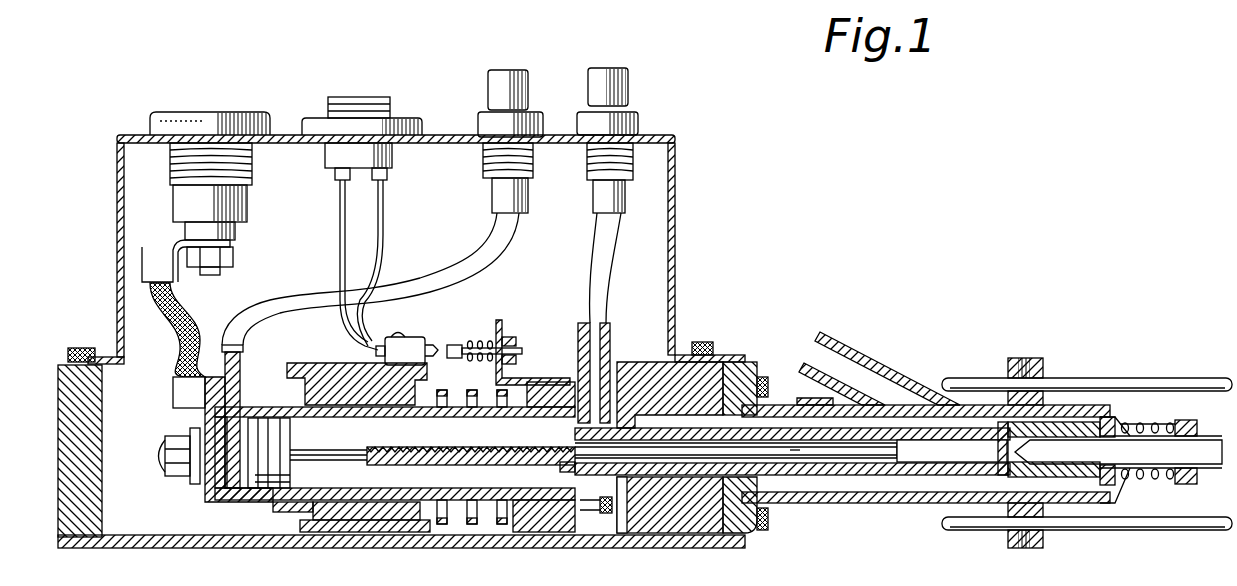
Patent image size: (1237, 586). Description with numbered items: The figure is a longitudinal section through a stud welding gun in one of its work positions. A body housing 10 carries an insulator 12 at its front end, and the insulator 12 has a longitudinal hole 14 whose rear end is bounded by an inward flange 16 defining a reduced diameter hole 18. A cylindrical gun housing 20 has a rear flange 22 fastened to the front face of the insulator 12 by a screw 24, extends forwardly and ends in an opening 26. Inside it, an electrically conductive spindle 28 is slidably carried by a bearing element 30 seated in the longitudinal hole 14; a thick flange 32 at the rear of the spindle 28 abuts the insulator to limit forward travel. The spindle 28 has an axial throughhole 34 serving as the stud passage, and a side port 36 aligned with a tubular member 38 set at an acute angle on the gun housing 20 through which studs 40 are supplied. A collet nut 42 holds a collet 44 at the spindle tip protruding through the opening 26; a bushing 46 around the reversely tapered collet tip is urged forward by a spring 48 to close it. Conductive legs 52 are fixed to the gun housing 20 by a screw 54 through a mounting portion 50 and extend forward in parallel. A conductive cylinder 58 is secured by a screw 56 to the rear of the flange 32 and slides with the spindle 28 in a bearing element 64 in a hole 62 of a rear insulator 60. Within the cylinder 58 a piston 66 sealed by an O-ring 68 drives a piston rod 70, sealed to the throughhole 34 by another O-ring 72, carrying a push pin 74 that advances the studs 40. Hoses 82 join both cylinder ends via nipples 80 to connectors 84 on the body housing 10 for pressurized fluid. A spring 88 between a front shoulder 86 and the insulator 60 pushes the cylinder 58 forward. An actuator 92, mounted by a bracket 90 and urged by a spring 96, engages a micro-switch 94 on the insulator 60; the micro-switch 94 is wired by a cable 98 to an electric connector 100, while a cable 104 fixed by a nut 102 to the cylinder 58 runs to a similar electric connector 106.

The body housing 10 is at (676, 188).
The insulator 12 is at (738, 358).
The longitudinal hole 14 is at (722, 408).
The inward flange 16 is at (632, 410).
The reduced diameter hole 18 is at (615, 505).
The gun housing 20 is at (828, 478).
The rear flange 22 is at (752, 533).
The screw 24 is at (769, 520).
The opening 26 is at (1140, 480).
The spindle 28 is at (882, 498).
The bearing element 30 is at (693, 495).
The flange 32 is at (578, 530).
The throughhole 34 is at (803, 458).
The side port 36 is at (1000, 440).
The tubular member 38 is at (868, 356).
The stud 40 is at (935, 455).
The collet nut 42 is at (1090, 478).
The collet 44 is at (1205, 438).
The bushing 46 is at (1197, 480).
The spring 48 is at (1158, 424).
The flange 50 is at (1040, 375).
The legs 52 is at (1180, 530).
The screw 54 is at (1032, 543).
The screw 56 is at (622, 520).
The cylinder 58 is at (240, 500).
The insulator 60 is at (340, 527).
The hole 62 is at (320, 368).
The bearing element 64 is at (282, 508).
The piston 66 is at (289, 436).
The O-ring 68 is at (290, 480).
The piston rod 70 is at (460, 446).
The O-ring 72 is at (565, 472).
The push pin 74 is at (858, 460).
The nipples 80 is at (242, 373).
The hoses 82 is at (440, 276).
The connectors 84 is at (608, 68).
The front shoulder 86 is at (545, 382).
The spring 88 is at (447, 390).
The bracket 90 is at (500, 324).
The actuator 92 is at (452, 344).
The micro-switch 94 is at (405, 336).
The spring 96 is at (476, 342).
The cable 98 is at (383, 218).
The electric connector 100 is at (362, 95).
The nut 102 is at (176, 436).
The cable 104 is at (198, 330).
The electric connector 106 is at (222, 118).